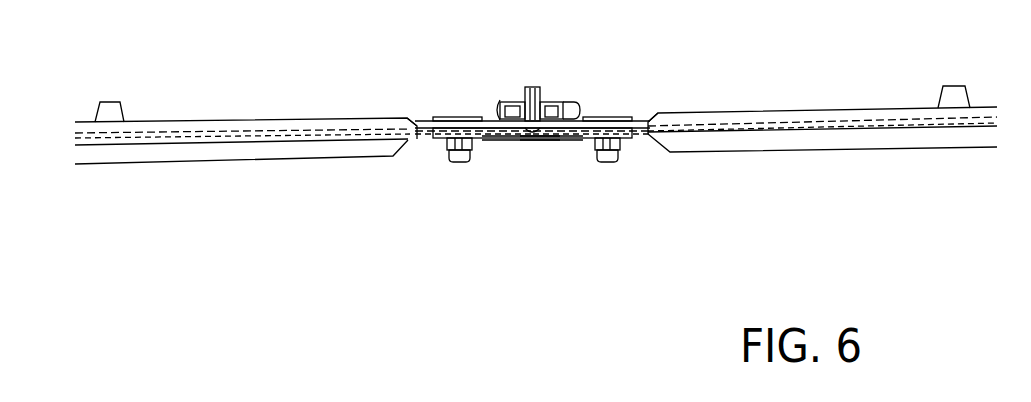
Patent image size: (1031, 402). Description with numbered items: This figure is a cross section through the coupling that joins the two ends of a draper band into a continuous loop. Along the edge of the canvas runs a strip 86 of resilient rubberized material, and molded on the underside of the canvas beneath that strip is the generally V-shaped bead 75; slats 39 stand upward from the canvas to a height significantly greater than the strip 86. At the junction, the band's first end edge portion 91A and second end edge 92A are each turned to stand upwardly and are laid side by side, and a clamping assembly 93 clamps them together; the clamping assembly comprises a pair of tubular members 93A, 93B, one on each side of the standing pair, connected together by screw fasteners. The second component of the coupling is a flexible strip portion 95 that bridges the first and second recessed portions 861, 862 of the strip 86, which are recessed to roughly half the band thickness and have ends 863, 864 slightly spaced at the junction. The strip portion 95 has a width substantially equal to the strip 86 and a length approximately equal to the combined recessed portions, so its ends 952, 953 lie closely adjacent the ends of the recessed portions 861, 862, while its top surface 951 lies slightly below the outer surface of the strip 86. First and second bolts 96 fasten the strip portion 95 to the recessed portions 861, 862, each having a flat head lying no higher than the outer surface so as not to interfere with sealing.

The slat 39 is at (106, 100).
The bead 75 is at (803, 145).
The strip 86 is at (290, 120).
The first recessed portion 861 is at (415, 124).
The second recessed portion 862 is at (650, 120).
The end of first recessed portion 863 is at (527, 140).
The end of second recessed portion 864 is at (552, 140).
The first end edge portion 91A is at (524, 88).
The second end edge 92A is at (546, 86).
The clamping assembly 93 is at (544, 70).
The tubular member 93A is at (518, 100).
The tubular member 93B is at (570, 98).
The strip portion 95 is at (486, 140).
The top surface of strip portion 951 is at (486, 107).
The end of strip portion 952 is at (418, 122).
The end of strip portion 953 is at (638, 135).
The bolt 96 is at (458, 163).